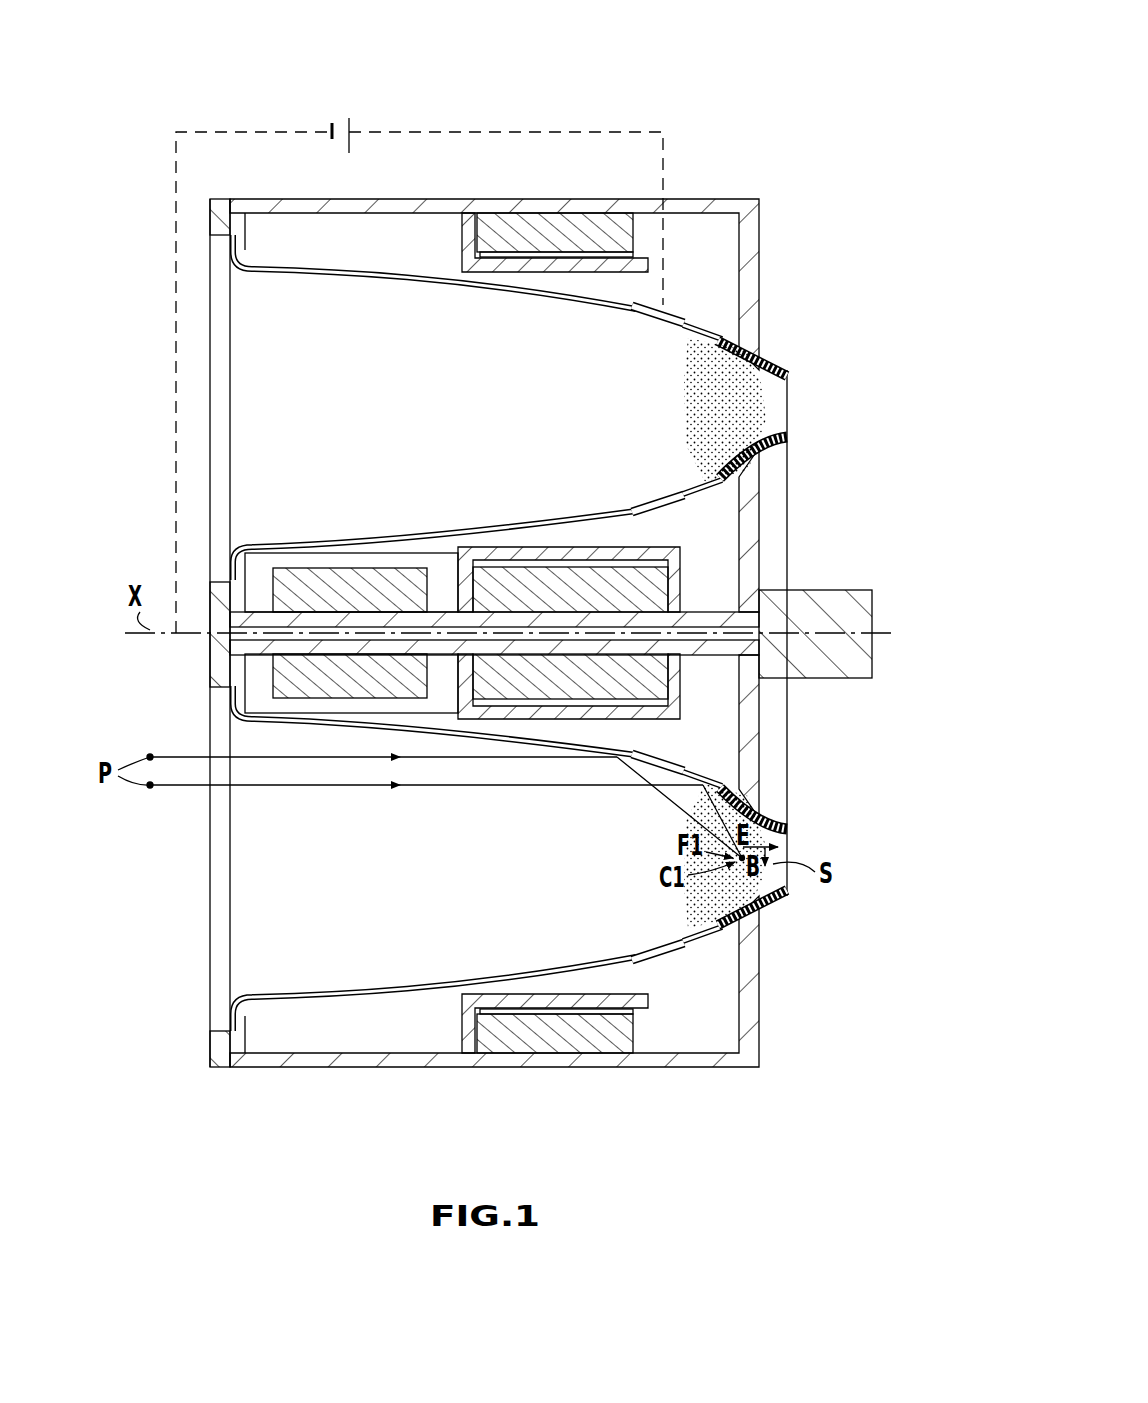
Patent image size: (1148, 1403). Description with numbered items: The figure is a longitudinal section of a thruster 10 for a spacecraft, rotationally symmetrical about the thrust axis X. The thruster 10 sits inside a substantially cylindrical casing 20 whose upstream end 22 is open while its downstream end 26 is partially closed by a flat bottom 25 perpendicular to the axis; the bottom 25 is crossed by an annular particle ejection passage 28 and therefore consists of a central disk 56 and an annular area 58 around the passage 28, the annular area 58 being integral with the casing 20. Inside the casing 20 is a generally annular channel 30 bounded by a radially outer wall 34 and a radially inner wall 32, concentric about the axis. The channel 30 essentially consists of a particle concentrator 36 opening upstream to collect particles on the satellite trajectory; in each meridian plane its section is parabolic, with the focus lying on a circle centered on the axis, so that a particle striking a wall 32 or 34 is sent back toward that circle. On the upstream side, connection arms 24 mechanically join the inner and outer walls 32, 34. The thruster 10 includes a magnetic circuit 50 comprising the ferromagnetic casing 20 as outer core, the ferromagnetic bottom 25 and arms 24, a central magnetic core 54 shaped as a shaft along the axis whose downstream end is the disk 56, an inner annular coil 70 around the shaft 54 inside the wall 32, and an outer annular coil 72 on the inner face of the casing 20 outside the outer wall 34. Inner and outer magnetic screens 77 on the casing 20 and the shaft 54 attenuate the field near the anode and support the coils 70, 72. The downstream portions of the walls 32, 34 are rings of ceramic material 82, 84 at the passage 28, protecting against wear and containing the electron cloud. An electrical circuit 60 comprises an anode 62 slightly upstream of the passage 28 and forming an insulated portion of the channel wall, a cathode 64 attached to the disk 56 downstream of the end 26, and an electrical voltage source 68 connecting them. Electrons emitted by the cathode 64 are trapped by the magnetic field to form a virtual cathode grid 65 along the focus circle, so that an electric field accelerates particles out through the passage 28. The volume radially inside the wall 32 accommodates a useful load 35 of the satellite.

The thruster 10 is at (480, 85).
The casing 20 is at (262, 213).
The upstream end 22 is at (183, 222).
The connection arms 24 is at (215, 490).
The bottom 25 is at (762, 718).
The downstream end 26 is at (780, 222).
The annular particle ejection passage 28 is at (780, 414).
The channel 30 is at (598, 396).
The radially inner wall 32 is at (695, 470).
The radially outer wall 34 is at (700, 350).
The useful load 35 is at (375, 585).
The particle concentrator 36 is at (412, 290).
The magnetic circuit 50 is at (572, 115).
The central magnetic core 54 is at (260, 607).
The disk 56 is at (762, 556).
The annular area 58 is at (760, 248).
The electrical circuit 60 is at (668, 168).
The anode 62 is at (676, 318).
The cathode 64 is at (858, 598).
The virtual cathode grid 65 is at (703, 900).
The electrical voltage source 68 is at (334, 120).
The inner annular coil 70 is at (543, 585).
The outer annular coil 72 is at (557, 213).
The magnetic screens 77 is at (547, 273).
The ring of ceramic material 82 is at (775, 452).
The ring of ceramic material 84 is at (770, 362).